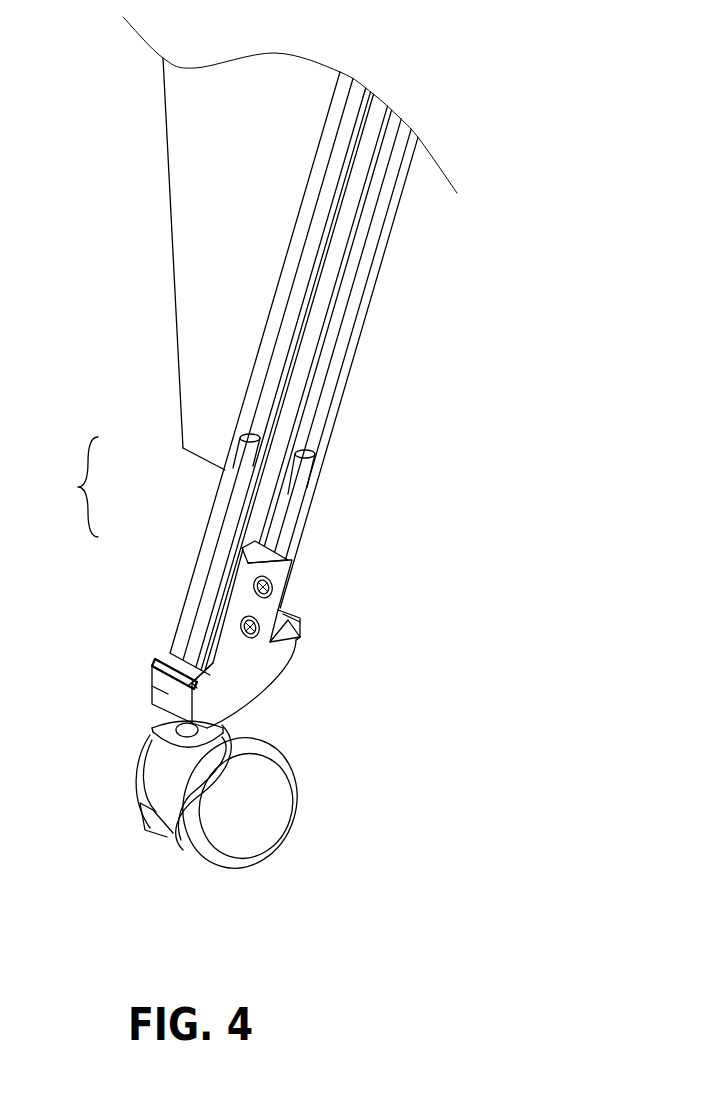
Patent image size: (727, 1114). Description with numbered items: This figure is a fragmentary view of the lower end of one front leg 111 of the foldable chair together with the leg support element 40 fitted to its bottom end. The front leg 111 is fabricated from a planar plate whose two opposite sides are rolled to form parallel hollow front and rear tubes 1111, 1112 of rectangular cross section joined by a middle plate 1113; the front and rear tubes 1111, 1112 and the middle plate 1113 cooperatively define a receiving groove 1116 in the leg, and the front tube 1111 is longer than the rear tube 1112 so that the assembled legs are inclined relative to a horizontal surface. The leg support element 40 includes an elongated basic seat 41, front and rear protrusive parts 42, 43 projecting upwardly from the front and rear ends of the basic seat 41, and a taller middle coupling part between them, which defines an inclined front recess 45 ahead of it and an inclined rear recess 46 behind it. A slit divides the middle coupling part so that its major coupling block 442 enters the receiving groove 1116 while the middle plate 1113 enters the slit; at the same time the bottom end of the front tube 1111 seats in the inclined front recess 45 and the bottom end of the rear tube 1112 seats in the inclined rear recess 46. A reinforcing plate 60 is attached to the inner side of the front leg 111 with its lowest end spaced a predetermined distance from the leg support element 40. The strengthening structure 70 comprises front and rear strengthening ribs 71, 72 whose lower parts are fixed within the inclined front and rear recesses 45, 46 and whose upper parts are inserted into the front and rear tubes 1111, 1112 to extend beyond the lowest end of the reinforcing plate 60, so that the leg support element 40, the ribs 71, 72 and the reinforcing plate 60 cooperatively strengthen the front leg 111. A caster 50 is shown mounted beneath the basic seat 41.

The leg support element 40 is at (434, 626).
The basic seat 41 is at (242, 685).
The front protrusive part 42 is at (160, 670).
The rear protrusive part 43 is at (297, 610).
The major coupling block 442 is at (277, 568).
The inclined front recess 45 is at (182, 693).
The inclined rear recess 46 is at (278, 628).
The caster 50 is at (245, 822).
The reinforcing plate 60 is at (247, 190).
The strengthening structure 70 is at (178, 485).
The front strengthening rib 71 is at (220, 510).
The rear strengthening rib 72 is at (230, 463).
The front leg 111 is at (395, 372).
The front tube 1111 is at (330, 218).
The rear tube 1112 is at (352, 327).
The middle plate 1113 is at (350, 207).
The receiving groove 1116 is at (302, 362).